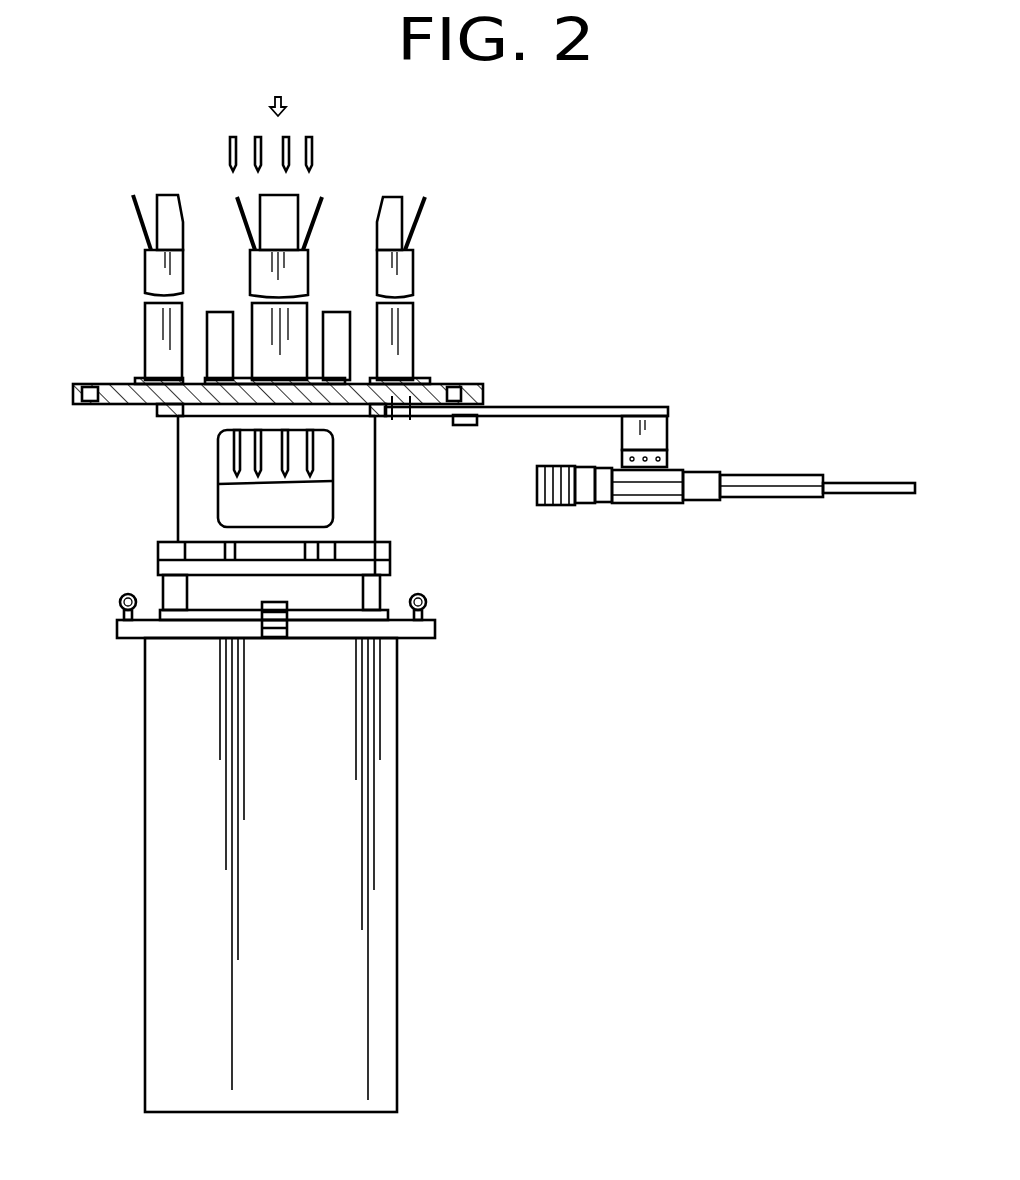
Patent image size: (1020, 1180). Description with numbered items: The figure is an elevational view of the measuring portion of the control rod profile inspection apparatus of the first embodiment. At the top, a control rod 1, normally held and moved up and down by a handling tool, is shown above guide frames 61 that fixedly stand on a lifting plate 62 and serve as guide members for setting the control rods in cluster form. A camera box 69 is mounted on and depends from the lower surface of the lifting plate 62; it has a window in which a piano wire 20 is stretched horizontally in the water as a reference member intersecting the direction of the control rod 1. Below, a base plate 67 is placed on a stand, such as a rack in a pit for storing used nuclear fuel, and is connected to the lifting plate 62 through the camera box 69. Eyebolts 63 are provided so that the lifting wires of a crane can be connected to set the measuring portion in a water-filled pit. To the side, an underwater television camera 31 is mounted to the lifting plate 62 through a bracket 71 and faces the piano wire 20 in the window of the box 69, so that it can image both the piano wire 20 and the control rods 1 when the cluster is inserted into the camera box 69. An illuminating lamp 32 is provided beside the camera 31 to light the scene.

The control rod 1 is at (230, 152).
The guide frames 61 is at (320, 207).
The lifting plate 62 is at (442, 393).
The bracket 71 is at (620, 408).
The underwater television camera 31 is at (668, 462).
The illuminating lamp 32 is at (590, 506).
The camera box 69 is at (287, 479).
The piano wire 20 is at (222, 484).
The eyebolts 63 is at (126, 593).
The base plate 67 is at (168, 626).